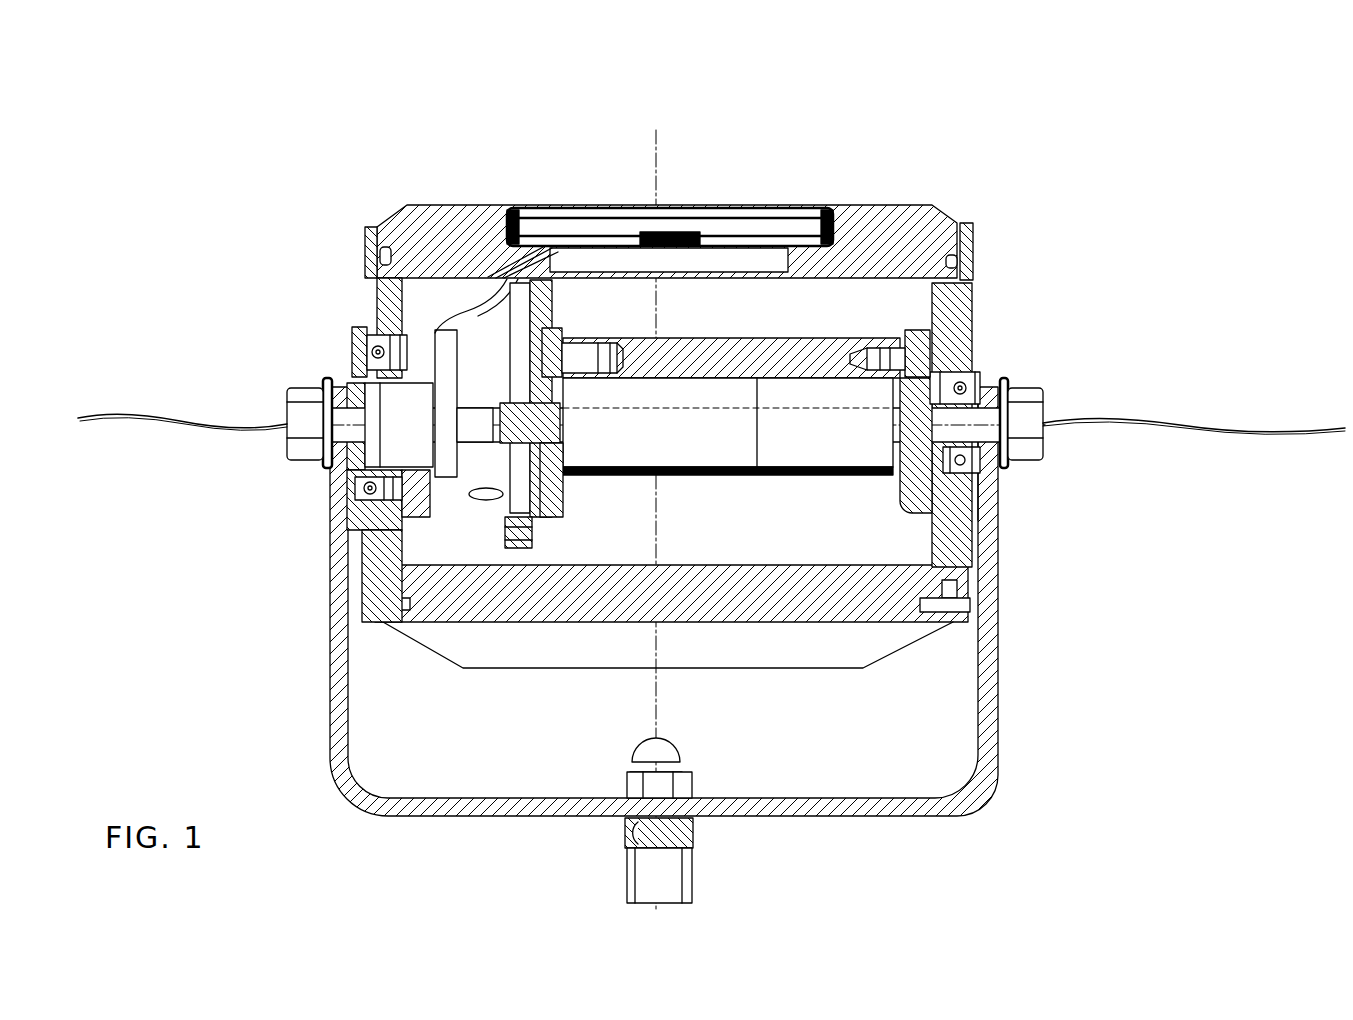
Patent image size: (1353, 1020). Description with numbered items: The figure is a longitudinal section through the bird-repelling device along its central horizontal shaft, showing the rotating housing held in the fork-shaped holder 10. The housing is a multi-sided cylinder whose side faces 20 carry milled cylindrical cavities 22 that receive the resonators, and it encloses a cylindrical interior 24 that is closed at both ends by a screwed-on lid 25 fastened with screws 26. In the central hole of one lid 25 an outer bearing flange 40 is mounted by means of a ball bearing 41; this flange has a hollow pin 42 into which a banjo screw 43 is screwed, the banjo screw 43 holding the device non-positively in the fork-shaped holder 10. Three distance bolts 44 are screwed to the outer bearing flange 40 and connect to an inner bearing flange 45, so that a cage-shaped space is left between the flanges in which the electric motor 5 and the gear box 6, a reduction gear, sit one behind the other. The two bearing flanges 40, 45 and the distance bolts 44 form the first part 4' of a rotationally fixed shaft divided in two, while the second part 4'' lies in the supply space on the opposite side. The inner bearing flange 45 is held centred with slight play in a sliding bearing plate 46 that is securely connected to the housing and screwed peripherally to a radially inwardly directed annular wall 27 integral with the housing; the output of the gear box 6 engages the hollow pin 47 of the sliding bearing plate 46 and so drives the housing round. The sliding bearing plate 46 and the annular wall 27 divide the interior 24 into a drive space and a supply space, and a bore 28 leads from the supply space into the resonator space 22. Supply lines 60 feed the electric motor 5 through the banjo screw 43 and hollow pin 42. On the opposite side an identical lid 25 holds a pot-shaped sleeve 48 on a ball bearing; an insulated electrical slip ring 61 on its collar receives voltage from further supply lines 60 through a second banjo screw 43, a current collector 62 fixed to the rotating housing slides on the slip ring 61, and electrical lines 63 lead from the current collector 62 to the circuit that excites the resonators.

The first part of the rotationally fixed shaft 4' is at (817, 606).
The rotor section 4'' is at (417, 617).
The electric motor 5 is at (815, 400).
The gear box 6 is at (712, 398).
The fork-shaped holder 10 is at (328, 660).
The side faces 20 is at (905, 255).
The cylindrical cavities 22 is at (697, 250).
The cylindrical interior 24 is at (1000, 493).
The lid 25 is at (965, 302).
The screws 26 is at (968, 605).
The peripheral annular wall 27 is at (512, 535).
The bore 28 is at (577, 337).
The outer bearing flange 40 is at (1000, 365).
The ball bearing 41 is at (985, 372).
The hollow pin 42 is at (967, 420).
The banjo screw 43 is at (1043, 393).
The distance bolts 44 is at (660, 365).
The inner bearing flange 45 is at (465, 493).
The sliding bearing plate 46 is at (528, 285).
The hollow pin 47 is at (563, 493).
The pot-shaped sleeve 48 is at (287, 415).
The supply lines 60 is at (1225, 418).
The electrical slip ring 61 is at (433, 412).
The current collector 62 is at (403, 385).
The electrical lines 63 is at (450, 385).